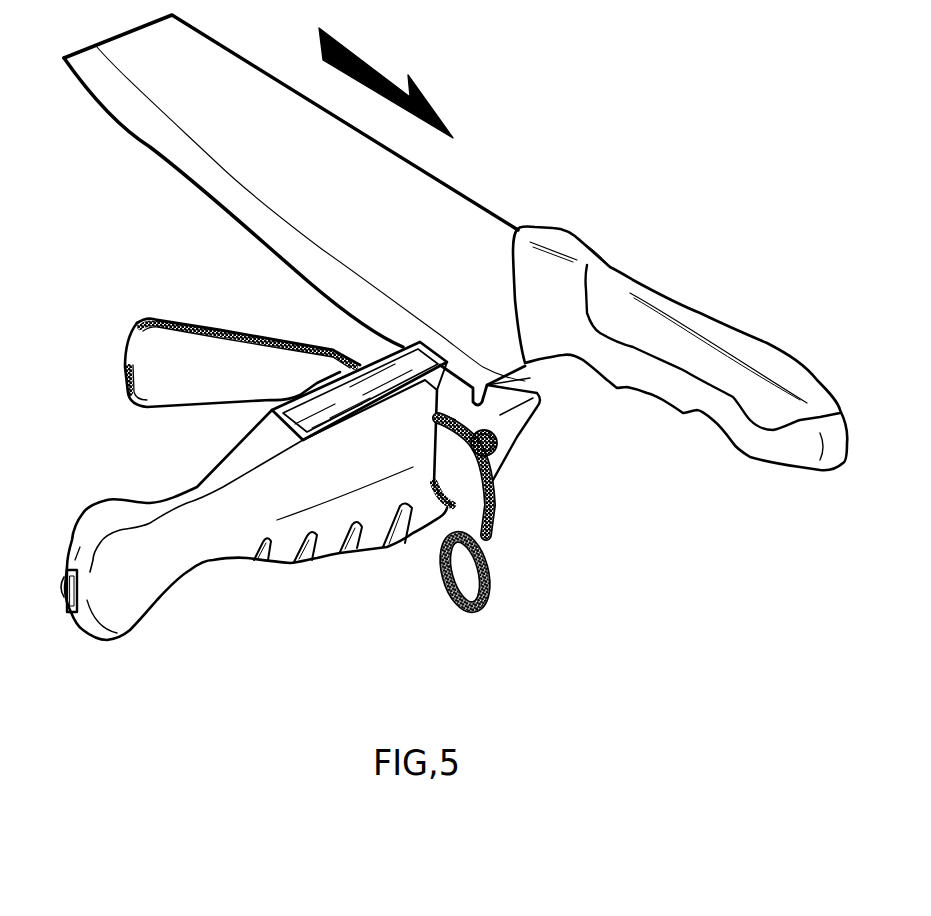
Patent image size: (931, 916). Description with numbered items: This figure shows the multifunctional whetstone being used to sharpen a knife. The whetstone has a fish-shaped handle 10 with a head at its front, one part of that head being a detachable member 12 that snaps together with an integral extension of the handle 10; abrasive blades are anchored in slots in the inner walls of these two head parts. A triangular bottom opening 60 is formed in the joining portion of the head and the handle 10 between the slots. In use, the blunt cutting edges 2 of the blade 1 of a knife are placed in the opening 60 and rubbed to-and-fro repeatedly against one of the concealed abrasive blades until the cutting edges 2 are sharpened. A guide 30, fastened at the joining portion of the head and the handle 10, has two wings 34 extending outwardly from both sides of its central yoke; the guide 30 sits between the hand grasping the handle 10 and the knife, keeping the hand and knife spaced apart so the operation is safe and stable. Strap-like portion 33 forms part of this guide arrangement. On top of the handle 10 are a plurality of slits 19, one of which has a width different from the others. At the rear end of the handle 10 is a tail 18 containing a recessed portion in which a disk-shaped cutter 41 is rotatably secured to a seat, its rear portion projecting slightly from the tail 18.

The blade 1 is at (485, 230).
The cutting edges 2 is at (145, 143).
The handle 10 is at (197, 570).
The detachable member 12 is at (510, 440).
The tail 18 is at (107, 510).
The slits 19 is at (337, 565).
The guide 30 is at (124, 313).
The upper retaining strap loop 33 is at (192, 347).
The wings 34 is at (490, 580).
The disk-shaped cutter 41 is at (60, 585).
The bottom opening 60 is at (527, 372).